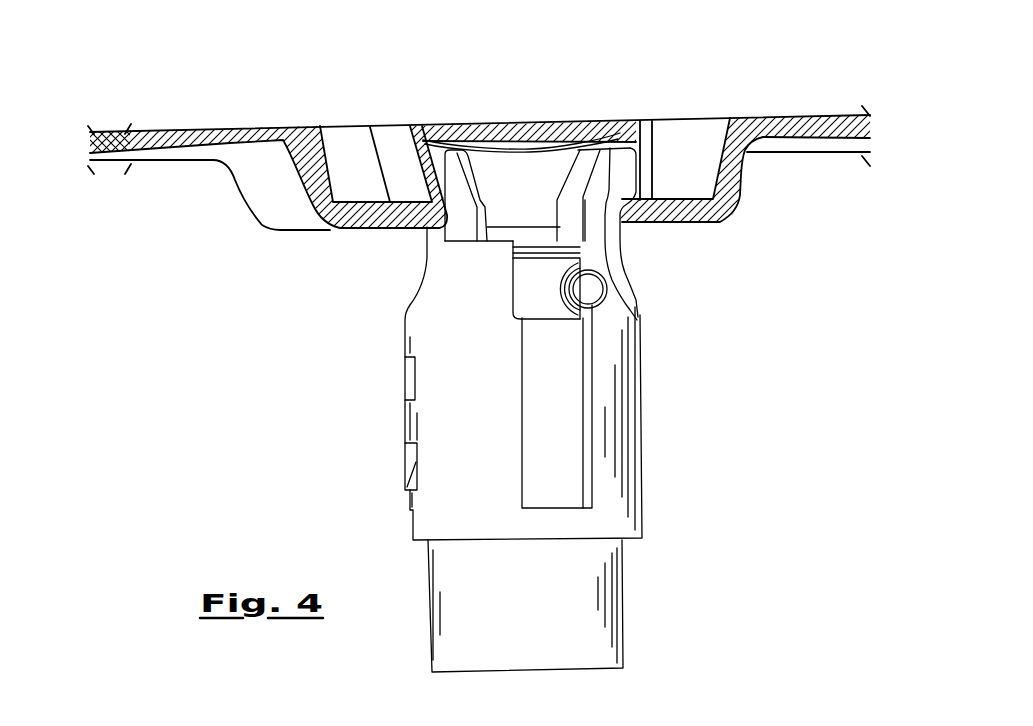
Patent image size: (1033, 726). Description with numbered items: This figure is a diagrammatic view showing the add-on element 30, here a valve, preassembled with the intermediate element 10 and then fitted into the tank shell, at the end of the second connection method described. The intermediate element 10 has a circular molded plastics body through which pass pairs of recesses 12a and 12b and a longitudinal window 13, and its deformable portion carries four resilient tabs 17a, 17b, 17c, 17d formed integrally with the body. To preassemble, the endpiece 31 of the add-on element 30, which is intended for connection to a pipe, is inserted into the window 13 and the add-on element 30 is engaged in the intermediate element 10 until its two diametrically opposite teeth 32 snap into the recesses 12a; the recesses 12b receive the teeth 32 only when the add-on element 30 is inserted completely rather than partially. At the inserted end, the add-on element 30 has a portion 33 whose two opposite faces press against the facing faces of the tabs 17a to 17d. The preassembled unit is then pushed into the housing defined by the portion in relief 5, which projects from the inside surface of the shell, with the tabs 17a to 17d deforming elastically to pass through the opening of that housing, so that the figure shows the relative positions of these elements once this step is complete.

The portion in relief 5 is at (713, 237).
The intermediate element 10 is at (652, 407).
The recesses 12a is at (405, 458).
The recesses 12b is at (408, 382).
The longitudinal window 13 is at (565, 482).
The resilient tab 17a is at (437, 237).
The resilient tab 17b is at (463, 228).
The resilient tab 17c is at (580, 172).
The resilient tab 17d is at (597, 225).
The add-on element 30 is at (630, 610).
The endpiece 31 is at (595, 287).
The teeth 32 is at (405, 487).
The portion 33 is at (540, 262).